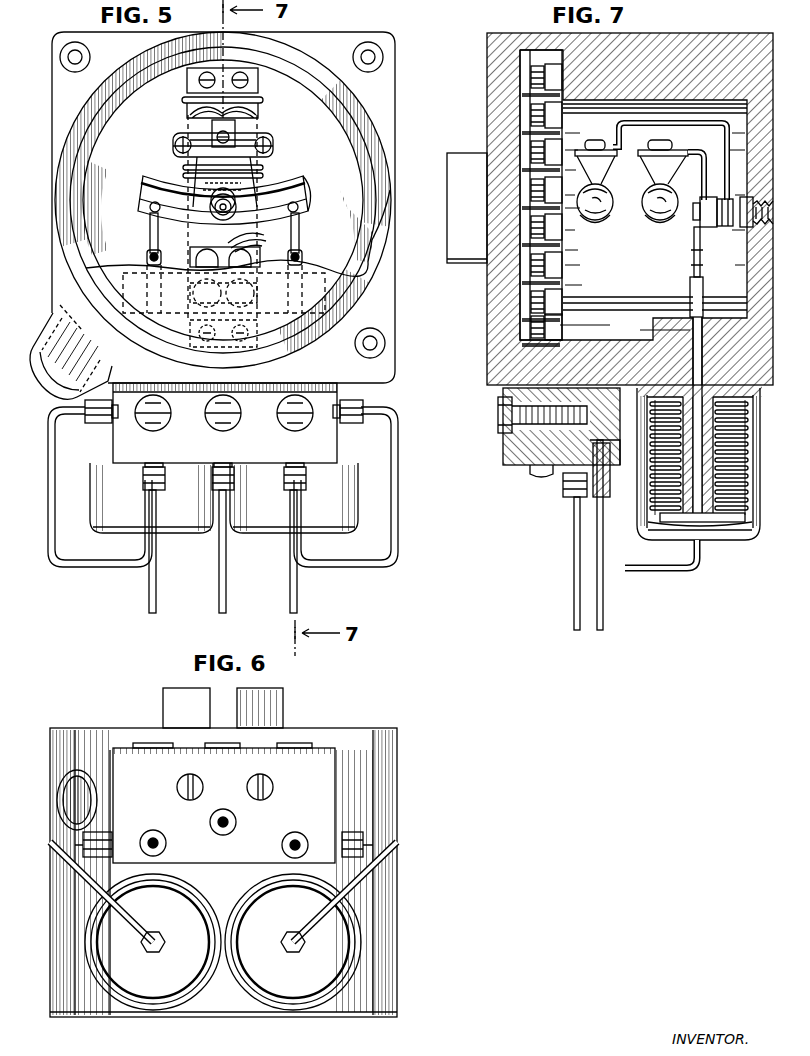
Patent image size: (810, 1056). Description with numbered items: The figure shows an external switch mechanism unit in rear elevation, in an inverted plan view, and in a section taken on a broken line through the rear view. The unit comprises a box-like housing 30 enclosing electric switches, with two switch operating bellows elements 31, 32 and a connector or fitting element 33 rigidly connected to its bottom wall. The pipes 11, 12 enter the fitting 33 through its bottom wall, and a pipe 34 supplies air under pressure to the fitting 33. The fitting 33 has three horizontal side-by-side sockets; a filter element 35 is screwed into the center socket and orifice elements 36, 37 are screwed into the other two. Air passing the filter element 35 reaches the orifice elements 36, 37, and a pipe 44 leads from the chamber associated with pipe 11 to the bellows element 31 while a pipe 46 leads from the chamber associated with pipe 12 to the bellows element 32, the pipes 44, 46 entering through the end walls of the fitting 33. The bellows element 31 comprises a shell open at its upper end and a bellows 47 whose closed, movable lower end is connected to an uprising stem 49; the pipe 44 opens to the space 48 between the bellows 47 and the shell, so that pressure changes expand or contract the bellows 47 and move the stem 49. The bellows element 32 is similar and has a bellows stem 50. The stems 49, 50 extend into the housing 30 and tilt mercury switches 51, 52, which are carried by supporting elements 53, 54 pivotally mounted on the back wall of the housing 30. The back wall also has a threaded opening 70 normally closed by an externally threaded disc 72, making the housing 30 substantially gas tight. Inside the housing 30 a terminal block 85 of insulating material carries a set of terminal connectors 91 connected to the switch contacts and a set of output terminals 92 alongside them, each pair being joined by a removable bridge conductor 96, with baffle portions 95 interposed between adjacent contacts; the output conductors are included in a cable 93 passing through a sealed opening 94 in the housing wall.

In FIG. 5, the switch housing 30 is at (302, 44).
In FIG. 7, the switch housing 30 is at (670, 34).
In FIG. 6, the switch housing 30 is at (395, 764).
In FIG. 5, the terminal block 85 is at (258, 105).
In FIG. 7, the terminal block 85 is at (557, 265).
In FIG. 5, the supporting element 54 is at (176, 148).
In FIG. 7, the supporting element 54 is at (631, 165).
In FIG. 5, the mercury switch 52 is at (279, 184).
In FIG. 7, the mercury switch 52 is at (598, 225).
In FIG. 7, the mercury switch 51 is at (660, 225).
In FIG. 5, the threaded opening 70 is at (352, 193).
In FIG. 7, the threaded opening 70 is at (587, 253).
In FIG. 5, the bellows stem 50 is at (150, 256).
In FIG. 5, the stem 49 is at (300, 256).
In FIG. 7, the stem 49 is at (692, 288).
In FIG. 5, the bridge conductor 96 is at (246, 239).
In FIG. 5, the output terminal 92 is at (195, 258).
In FIG. 5, the baffle portion 95 is at (253, 259).
In FIG. 5, the terminal connector 91 is at (256, 291).
In FIG. 7, the terminal connector 91 is at (530, 297).
In FIG. 5, the externally threaded disc 72 is at (345, 270).
In FIG. 7, the externally threaded disc 72 is at (493, 110).
In FIG. 5, the sealed opening 94 is at (58, 309).
In FIG. 6, the sealed opening 94 is at (57, 788).
In FIG. 5, the cable 93 is at (50, 341).
In FIG. 5, the orifice element 37 is at (172, 412).
In FIG. 6, the orifice element 37 is at (147, 743).
In FIG. 5, the filter element 35 is at (241, 412).
In FIG. 6, the filter element 35 is at (230, 743).
In FIG. 5, the orifice element 36 is at (290, 427).
In FIG. 7, the orifice element 36 is at (502, 408).
In FIG. 6, the orifice element 36 is at (297, 743).
In FIG. 5, the connector or fitting element 33 is at (338, 445).
In FIG. 7, the connector or fitting element 33 is at (505, 448).
In FIG. 6, the connector or fitting element 33 is at (325, 762).
In FIG. 5, the bellows element 32 is at (96, 476).
In FIG. 6, the bellows element 32 is at (172, 1005).
In FIG. 5, the bellows element 31 is at (356, 488).
In FIG. 7, the bellows element 31 is at (761, 513).
In FIG. 6, the bellows element 31 is at (302, 1005).
In FIG. 5, the pipe 46 is at (100, 569).
In FIG. 6, the pipe 46 is at (138, 938).
In FIG. 5, the pipe 44 is at (343, 569).
In FIG. 7, the pipe 44 is at (662, 572).
In FIG. 6, the pipe 44 is at (309, 938).
In FIG. 5, the pipe 12 is at (149, 594).
In FIG. 6, the pipe 12 is at (145, 836).
In FIG. 5, the pipe 34 is at (226, 592).
In FIG. 7, the pipe 34 is at (574, 612).
In FIG. 6, the pipe 34 is at (226, 811).
In FIG. 5, the pipe 11 is at (298, 595).
In FIG. 7, the pipe 11 is at (603, 612).
In FIG. 6, the pipe 11 is at (290, 833).
In FIG. 7, the supporting element 53 is at (709, 168).
In FIG. 7, the bellows 47 is at (750, 447).
In FIG. 7, the space 48 is at (718, 528).